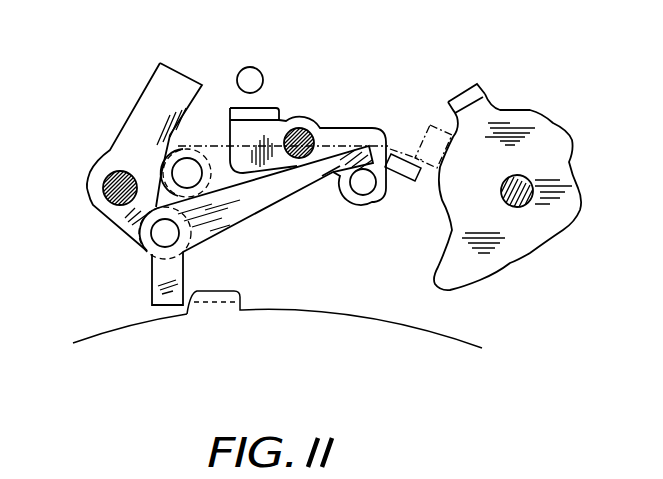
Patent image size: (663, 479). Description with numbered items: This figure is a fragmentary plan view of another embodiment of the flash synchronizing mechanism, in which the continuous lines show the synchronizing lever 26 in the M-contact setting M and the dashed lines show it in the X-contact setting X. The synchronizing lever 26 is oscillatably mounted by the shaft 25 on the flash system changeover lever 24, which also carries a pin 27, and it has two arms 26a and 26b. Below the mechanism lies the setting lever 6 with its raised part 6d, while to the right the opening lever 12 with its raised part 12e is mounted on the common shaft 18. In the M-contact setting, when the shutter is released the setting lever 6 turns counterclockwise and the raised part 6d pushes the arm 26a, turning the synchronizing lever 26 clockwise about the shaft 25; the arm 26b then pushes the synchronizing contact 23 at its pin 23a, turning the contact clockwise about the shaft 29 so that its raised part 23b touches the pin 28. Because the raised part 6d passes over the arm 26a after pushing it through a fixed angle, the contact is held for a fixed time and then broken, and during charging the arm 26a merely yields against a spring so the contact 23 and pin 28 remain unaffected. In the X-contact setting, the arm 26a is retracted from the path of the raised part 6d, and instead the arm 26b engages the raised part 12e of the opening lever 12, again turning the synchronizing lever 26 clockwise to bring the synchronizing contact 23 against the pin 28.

The X-contact setting X is at (68, 62).
The M-contact setting M is at (193, 56).
The setting lever 6 is at (348, 327).
The raised part 6d is at (230, 300).
The opening lever 12 is at (530, 146).
The raised part 12e is at (472, 93).
The common shaft 18 is at (522, 208).
The synchronizing contact 23 is at (358, 135).
The pin 23a is at (364, 197).
The raised part 23b is at (265, 112).
The flash system changeover lever 24 is at (124, 158).
The shaft 25 is at (158, 235).
The synchronizing lever 26 is at (243, 198).
The arm 26a is at (170, 298).
The arm 26b is at (330, 173).
The pin of arm 27 is at (115, 192).
The pin 28 is at (262, 75).
The shaft 29 is at (303, 133).